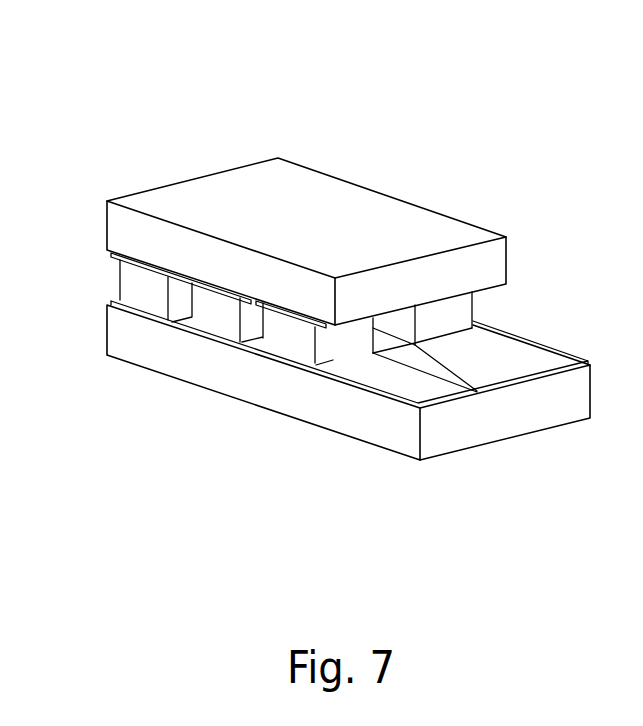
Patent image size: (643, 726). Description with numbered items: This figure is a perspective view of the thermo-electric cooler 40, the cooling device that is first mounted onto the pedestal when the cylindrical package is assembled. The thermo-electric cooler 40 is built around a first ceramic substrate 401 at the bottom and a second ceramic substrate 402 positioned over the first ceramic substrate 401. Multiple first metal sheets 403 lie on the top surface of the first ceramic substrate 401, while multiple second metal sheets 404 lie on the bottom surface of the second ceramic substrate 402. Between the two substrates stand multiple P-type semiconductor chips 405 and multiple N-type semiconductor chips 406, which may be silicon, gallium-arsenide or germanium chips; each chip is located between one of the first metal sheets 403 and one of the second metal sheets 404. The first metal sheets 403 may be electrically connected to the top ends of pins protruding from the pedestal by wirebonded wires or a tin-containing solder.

The thermo-electric cooler 40 is at (322, 153).
The first ceramic substrate 401 is at (348, 415).
The second ceramic substrate 402 is at (497, 263).
The first metal sheets 403 is at (418, 392).
The second metal sheets 404 is at (182, 280).
The P-type semiconductor chips 405 is at (293, 345).
The N-type semiconductor chips 406 is at (220, 325).